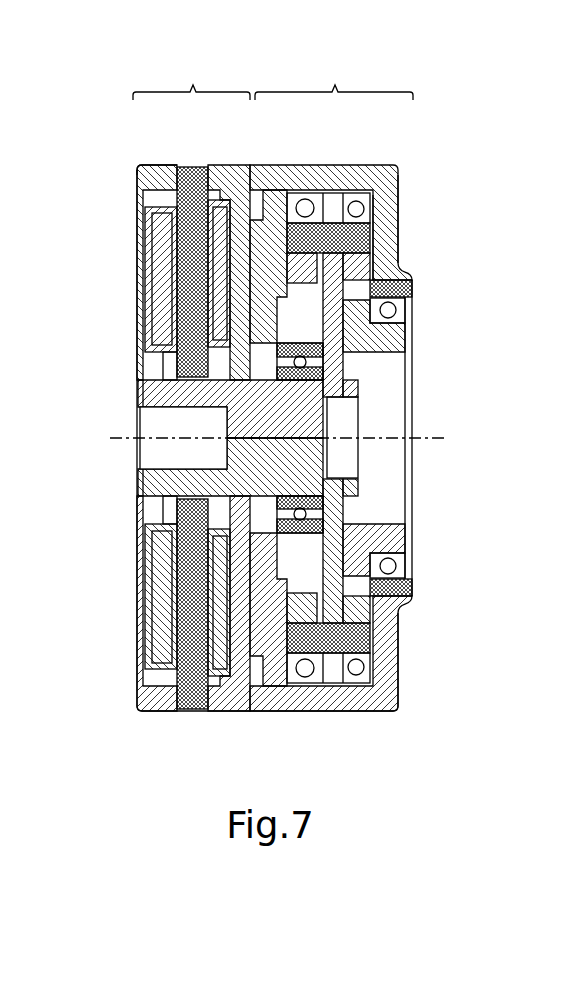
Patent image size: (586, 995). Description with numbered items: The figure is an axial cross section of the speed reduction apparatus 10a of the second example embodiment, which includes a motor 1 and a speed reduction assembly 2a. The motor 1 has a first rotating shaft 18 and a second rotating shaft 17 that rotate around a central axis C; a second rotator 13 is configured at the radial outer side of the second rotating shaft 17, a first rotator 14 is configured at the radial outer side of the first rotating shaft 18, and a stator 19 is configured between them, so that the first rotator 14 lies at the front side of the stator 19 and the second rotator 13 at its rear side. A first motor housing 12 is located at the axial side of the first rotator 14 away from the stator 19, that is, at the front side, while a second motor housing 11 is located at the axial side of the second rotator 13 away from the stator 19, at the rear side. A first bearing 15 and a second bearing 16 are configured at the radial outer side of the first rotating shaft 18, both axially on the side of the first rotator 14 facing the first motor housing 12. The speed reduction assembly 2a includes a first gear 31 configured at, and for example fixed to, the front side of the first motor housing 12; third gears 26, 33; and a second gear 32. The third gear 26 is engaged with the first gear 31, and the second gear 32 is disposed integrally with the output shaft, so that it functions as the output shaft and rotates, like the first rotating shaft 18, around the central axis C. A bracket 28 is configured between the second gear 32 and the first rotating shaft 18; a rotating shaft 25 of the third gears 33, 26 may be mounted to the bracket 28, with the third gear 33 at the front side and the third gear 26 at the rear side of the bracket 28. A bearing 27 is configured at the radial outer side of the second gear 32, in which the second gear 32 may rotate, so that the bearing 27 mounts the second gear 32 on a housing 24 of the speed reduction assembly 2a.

The speed reduction apparatus 10a is at (278, 29).
The motor 1 is at (191, 76).
The speed reduction assembly 2a is at (334, 76).
The second motor housing 11 is at (163, 167).
The first motor housing 12 is at (237, 173).
The second rotator 13 is at (140, 207).
The first rotator 14 is at (200, 282).
The first bearing 15 is at (227, 345).
The second bearing 16 is at (277, 342).
The second rotating shaft 17 is at (137, 360).
The first rotating shaft 18 is at (217, 467).
The stator 19 is at (137, 168).
The housing 24 is at (400, 170).
The rotating shaft 25 is at (405, 190).
The third gear 26 is at (330, 240).
The bearing 27 is at (412, 293).
The bracket 28 is at (413, 328).
The first gear 31 is at (320, 262).
The second gear 32 is at (413, 347).
The third gear 33 is at (358, 237).
The central axis C is at (290, 438).